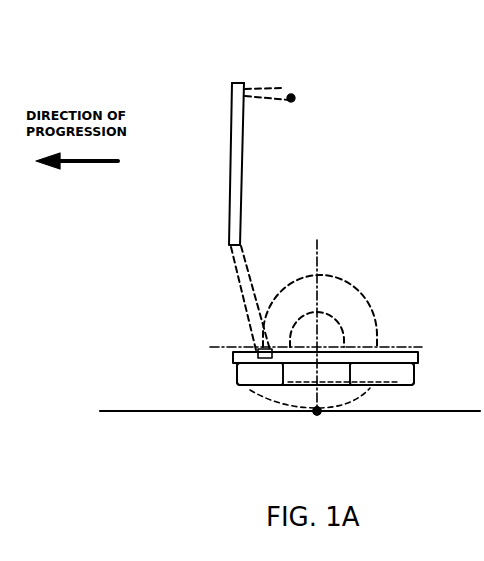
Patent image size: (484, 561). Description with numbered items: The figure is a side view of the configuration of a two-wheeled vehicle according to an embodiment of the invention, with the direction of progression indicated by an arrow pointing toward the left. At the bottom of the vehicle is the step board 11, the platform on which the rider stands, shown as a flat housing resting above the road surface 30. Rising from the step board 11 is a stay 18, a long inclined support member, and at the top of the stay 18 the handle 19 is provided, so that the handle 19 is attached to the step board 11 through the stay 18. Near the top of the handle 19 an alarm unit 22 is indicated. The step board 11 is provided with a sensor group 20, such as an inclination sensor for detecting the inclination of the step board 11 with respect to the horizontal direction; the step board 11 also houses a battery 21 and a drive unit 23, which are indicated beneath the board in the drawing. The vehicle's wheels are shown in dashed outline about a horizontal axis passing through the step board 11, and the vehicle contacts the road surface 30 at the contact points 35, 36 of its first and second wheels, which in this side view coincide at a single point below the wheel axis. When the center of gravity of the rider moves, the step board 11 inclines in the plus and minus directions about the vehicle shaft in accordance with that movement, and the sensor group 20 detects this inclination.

The step board 11 is at (246, 350).
The stay 18 is at (232, 148).
The handle 19 is at (243, 80).
The sensor group 20 is at (254, 369).
The battery 21 is at (385, 369).
The alarm unit 22 is at (282, 85).
The drive unit 23 is at (333, 369).
The road surface 30 is at (131, 410).
The contact point 35 is at (317, 416).
The contact point 36 is at (317, 411).